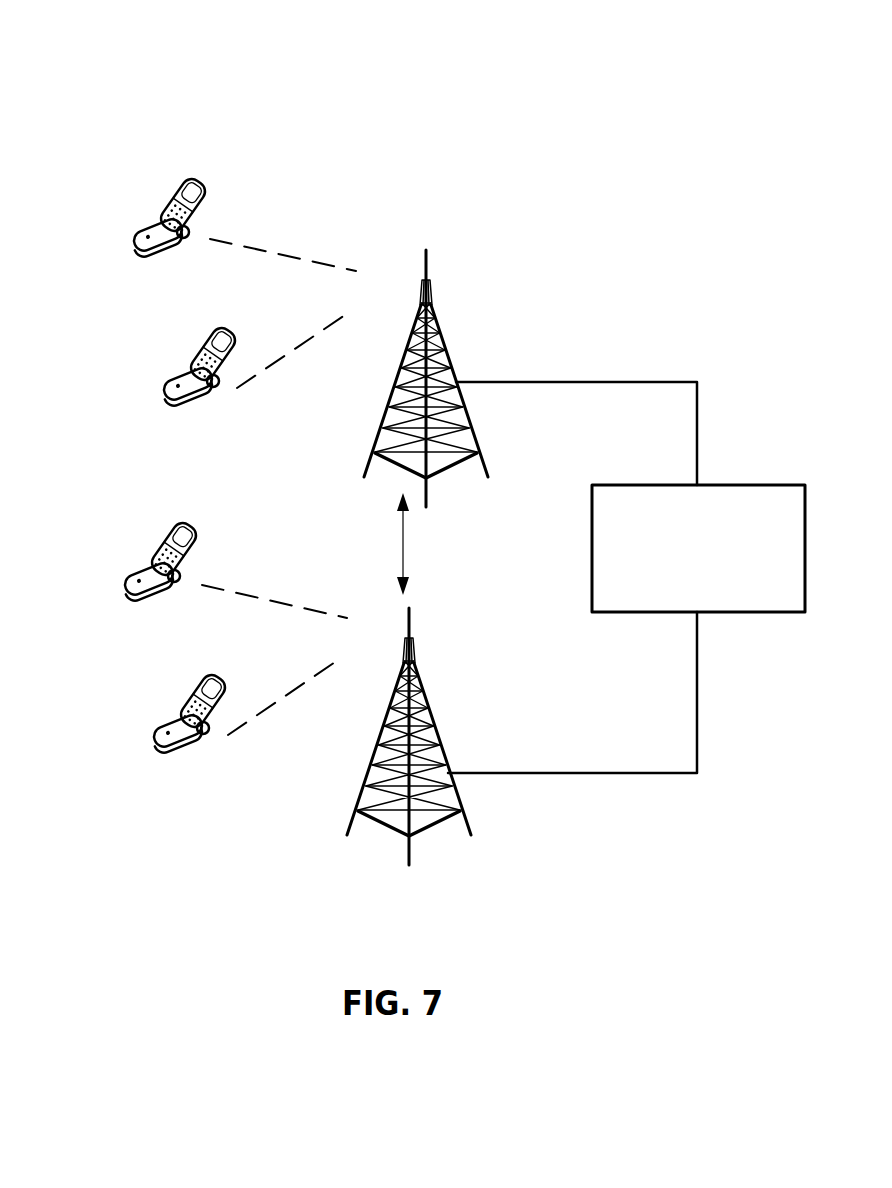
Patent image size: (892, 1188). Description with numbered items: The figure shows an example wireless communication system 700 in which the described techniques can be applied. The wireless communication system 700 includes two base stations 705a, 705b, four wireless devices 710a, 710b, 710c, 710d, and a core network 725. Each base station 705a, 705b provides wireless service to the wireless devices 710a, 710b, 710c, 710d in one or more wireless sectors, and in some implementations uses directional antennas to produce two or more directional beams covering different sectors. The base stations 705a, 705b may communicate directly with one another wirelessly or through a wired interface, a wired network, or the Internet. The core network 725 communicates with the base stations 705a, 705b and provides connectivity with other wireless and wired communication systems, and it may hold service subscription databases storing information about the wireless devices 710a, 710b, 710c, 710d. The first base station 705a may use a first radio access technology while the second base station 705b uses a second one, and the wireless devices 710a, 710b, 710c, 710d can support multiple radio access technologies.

The wireless communication system 700 is at (425, 46).
The first base station 705a is at (437, 332).
The second base station 705b is at (411, 633).
The wireless device 710a is at (165, 190).
The wireless device 710b is at (171, 357).
The wireless device 710c is at (132, 552).
The wireless device 710d is at (161, 704).
The core network 725 is at (604, 485).